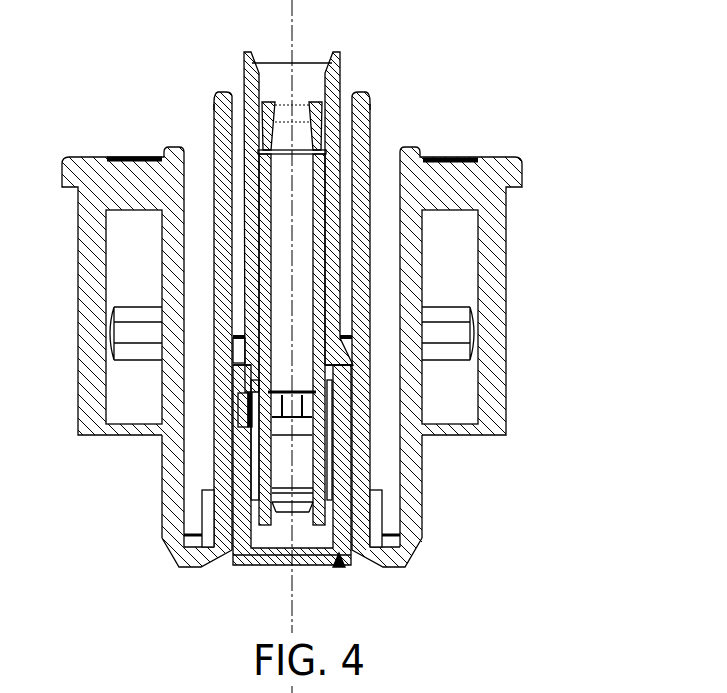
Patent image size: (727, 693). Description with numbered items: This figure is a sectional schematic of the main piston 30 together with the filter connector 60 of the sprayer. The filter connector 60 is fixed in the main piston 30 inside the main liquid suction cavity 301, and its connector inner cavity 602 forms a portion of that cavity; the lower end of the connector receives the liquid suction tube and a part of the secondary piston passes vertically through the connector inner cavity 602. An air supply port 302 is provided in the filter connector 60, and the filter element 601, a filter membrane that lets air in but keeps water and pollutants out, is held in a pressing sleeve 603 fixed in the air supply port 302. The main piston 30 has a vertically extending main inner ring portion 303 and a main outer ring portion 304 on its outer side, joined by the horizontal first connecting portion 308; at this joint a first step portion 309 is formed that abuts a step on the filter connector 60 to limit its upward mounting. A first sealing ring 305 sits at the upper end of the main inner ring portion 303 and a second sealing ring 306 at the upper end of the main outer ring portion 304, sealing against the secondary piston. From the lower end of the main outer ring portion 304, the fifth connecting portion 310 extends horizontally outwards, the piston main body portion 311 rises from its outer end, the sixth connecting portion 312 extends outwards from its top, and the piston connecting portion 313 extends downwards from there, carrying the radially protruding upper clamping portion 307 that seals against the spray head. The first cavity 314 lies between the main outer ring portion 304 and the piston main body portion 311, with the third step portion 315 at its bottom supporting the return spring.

The main piston 30 is at (89, 157).
The filter connector 60 is at (340, 569).
The main liquid suction cavity 301 is at (270, 538).
The air supply port 302 is at (242, 412).
The main inner ring portion 303 is at (332, 205).
The main outer ring portion 304 is at (360, 220).
The first sealing ring 305 is at (317, 108).
The second sealing ring 306 is at (353, 100).
The upper clamping portion 307 is at (308, 328).
The first connecting portion 308 is at (345, 350).
The first step portion 309 is at (349, 368).
The fifth connecting portion 310 is at (387, 567).
The piston main body portion 311 is at (407, 482).
The sixth connecting portion 312 is at (452, 175).
The piston connecting portion 313 is at (492, 242).
The first cavity 314 is at (388, 317).
The third step portion 315 is at (373, 518).
The filter element 601 is at (250, 432).
The connector inner cavity 602 is at (282, 468).
The pressing sleeve 603 is at (240, 400).